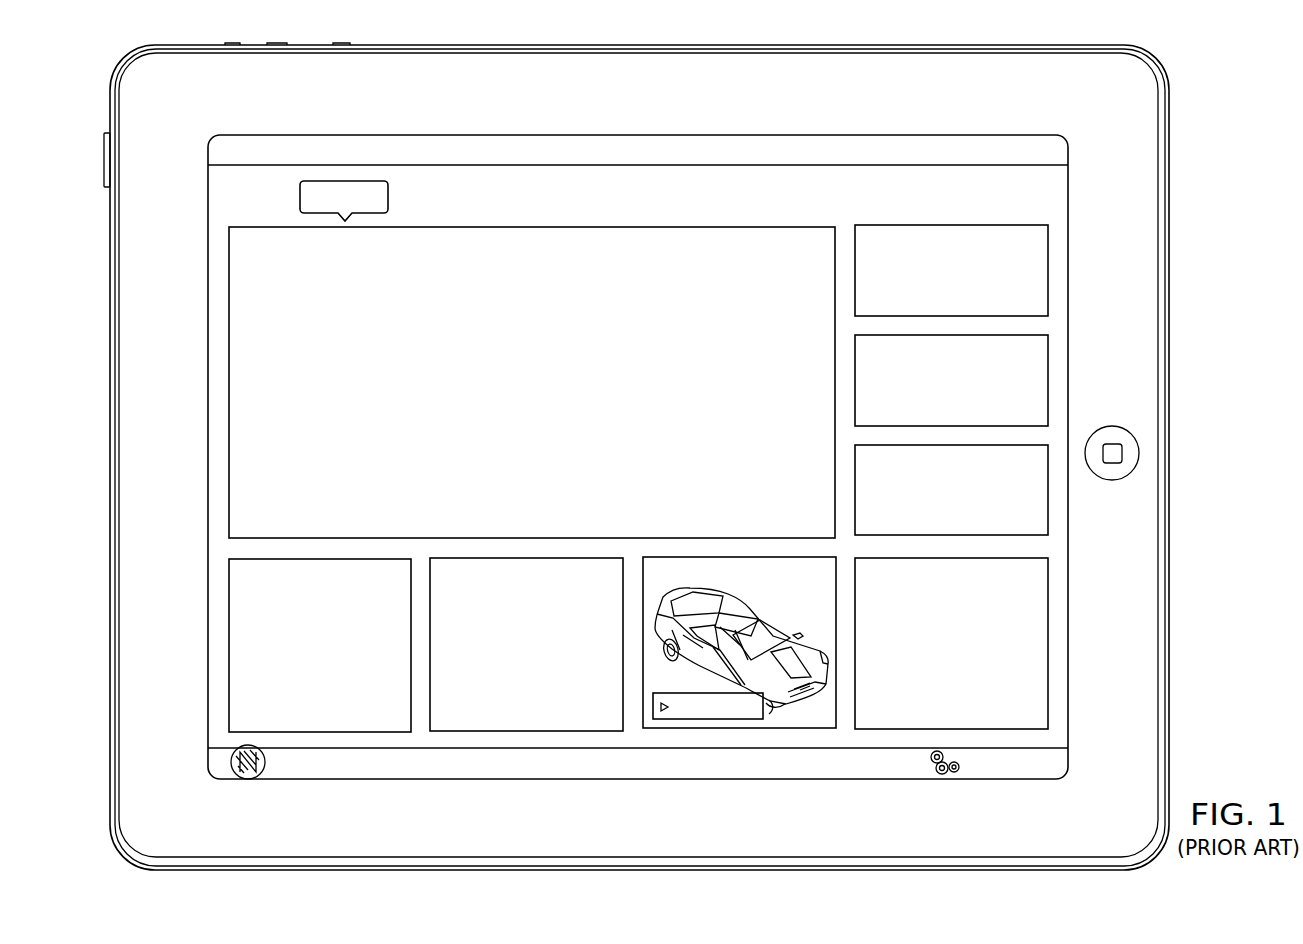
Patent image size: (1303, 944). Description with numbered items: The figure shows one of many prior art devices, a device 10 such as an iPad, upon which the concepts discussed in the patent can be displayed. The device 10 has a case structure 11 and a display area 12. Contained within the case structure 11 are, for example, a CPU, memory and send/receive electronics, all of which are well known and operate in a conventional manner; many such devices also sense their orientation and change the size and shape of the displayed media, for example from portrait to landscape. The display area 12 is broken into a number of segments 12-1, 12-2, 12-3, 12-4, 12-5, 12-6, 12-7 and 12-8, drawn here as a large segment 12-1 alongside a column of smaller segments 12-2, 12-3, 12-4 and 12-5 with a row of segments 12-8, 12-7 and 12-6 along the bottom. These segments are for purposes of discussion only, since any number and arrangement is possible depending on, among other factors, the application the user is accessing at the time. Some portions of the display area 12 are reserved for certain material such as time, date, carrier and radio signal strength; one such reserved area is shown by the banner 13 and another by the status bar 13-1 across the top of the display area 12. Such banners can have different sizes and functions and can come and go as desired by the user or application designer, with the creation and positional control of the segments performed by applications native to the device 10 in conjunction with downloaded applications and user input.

The device 10 is at (1215, 167).
The case structure 11 is at (1175, 401).
The display area 12 is at (214, 456).
The segment 12-1 is at (507, 395).
The segment 12-2 is at (927, 283).
The segment 12-3 is at (927, 393).
The segment 12-4 is at (927, 503).
The segment 12-5 is at (927, 654).
The segment 12-6 is at (740, 556).
The segment 12-7 is at (500, 654).
The segment 12-8 is at (297, 656).
The banner 13 is at (1040, 192).
The status bar 13-1 is at (875, 140).